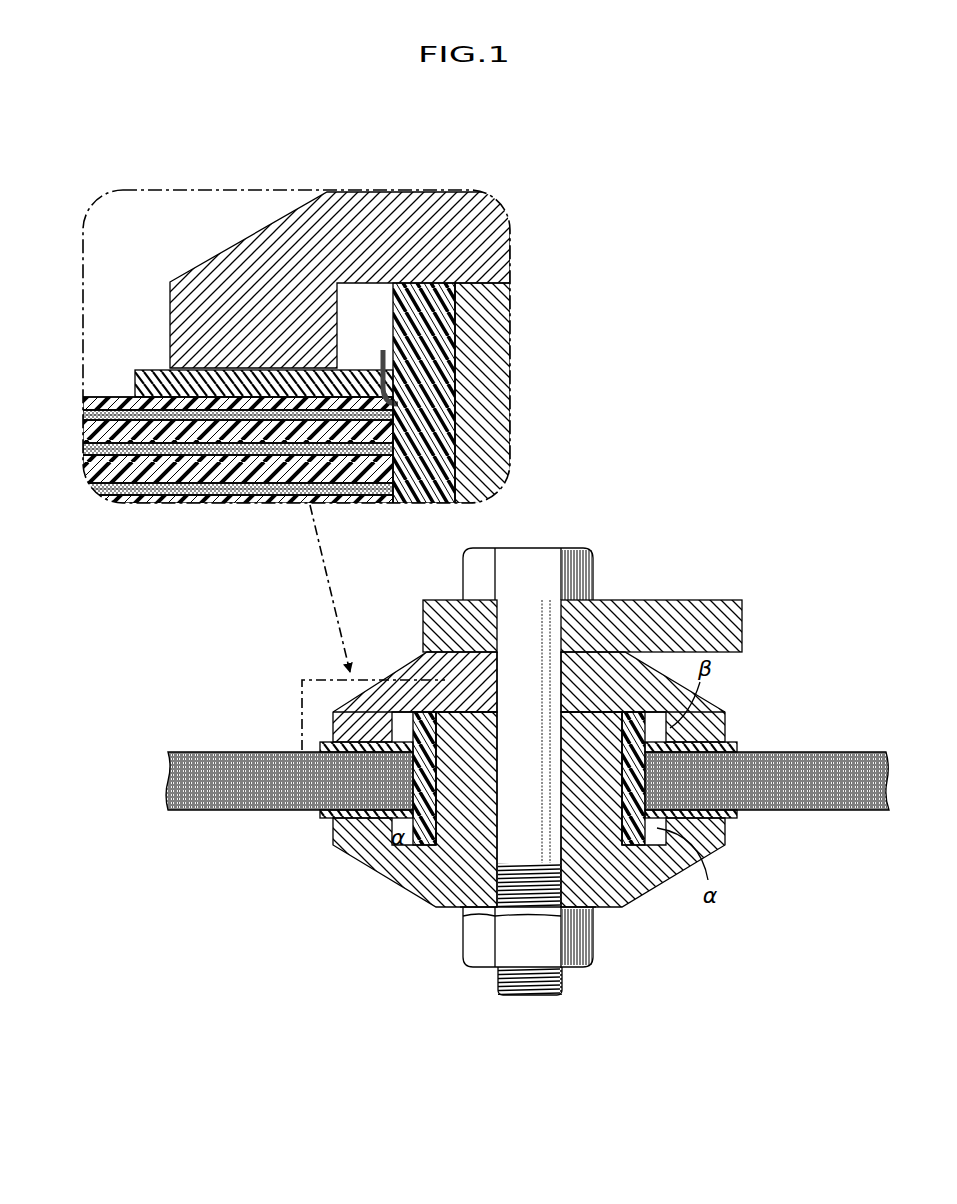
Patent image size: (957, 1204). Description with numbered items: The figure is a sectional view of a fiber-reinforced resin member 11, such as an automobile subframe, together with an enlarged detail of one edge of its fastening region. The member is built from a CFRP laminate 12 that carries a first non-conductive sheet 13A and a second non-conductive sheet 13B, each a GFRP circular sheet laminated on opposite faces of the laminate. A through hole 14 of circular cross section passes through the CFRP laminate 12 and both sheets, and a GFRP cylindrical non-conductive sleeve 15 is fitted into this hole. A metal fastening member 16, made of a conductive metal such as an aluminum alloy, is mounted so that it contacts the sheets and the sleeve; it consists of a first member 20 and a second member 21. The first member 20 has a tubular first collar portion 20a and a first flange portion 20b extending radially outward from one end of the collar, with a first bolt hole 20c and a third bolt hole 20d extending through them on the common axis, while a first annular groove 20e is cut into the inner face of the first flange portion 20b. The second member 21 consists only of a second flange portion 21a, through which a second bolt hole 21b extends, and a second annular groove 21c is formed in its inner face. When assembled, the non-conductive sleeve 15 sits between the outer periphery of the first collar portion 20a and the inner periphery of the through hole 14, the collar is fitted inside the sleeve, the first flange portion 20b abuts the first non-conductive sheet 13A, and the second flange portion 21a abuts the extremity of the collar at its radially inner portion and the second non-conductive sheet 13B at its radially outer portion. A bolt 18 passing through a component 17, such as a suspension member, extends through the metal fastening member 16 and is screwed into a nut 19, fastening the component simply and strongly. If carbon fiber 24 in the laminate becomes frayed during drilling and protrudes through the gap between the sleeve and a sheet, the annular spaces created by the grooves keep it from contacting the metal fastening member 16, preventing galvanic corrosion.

The fiber-reinforced resin member 11 is at (353, 895).
The CFRP laminate 12 is at (108, 392).
The first non-conductive sheet 13A is at (328, 818).
The second non-conductive sheet 13B is at (150, 380).
The through hole 14 is at (403, 458).
The non-conductive sleeve 15 is at (440, 443).
The metal fastening member 16 is at (808, 610).
The component 17 is at (655, 612).
The bolt 18 is at (540, 565).
The nut 19 is at (477, 958).
The first member 20 is at (732, 835).
The first collar portion 20a is at (507, 372).
The first flange portion 20b is at (358, 865).
The first bolt hole 20c is at (497, 738).
The third bolt hole 20d is at (512, 866).
The first annular groove 20e is at (399, 850).
The second member 21 is at (237, 233).
The second flange portion 21a is at (207, 285).
The second bolt hole 21b is at (497, 668).
The second annular groove 21c is at (365, 295).
The carbon fiber 24 is at (216, 425).